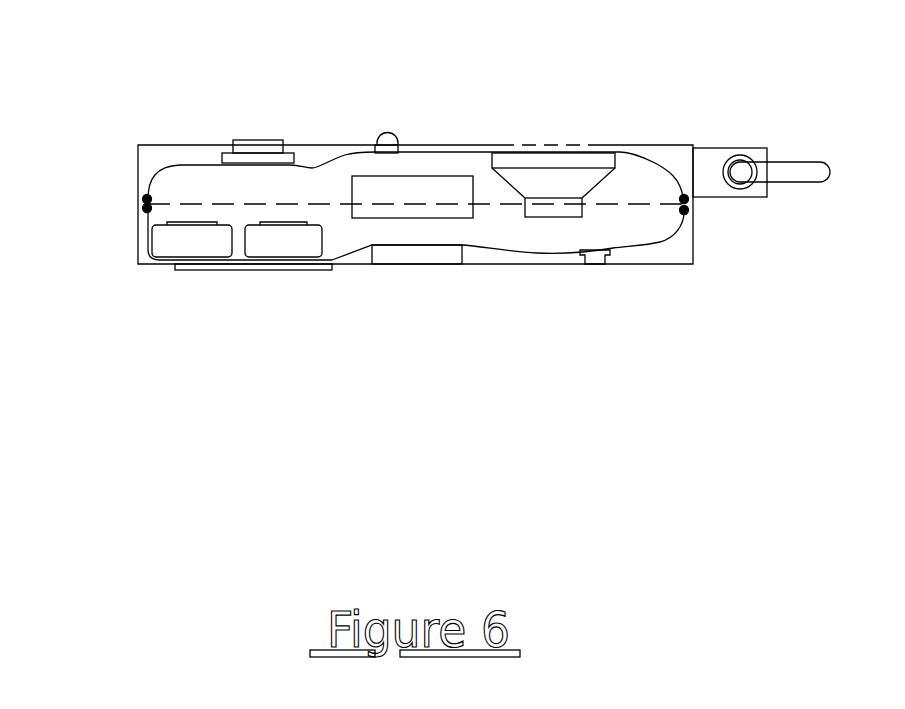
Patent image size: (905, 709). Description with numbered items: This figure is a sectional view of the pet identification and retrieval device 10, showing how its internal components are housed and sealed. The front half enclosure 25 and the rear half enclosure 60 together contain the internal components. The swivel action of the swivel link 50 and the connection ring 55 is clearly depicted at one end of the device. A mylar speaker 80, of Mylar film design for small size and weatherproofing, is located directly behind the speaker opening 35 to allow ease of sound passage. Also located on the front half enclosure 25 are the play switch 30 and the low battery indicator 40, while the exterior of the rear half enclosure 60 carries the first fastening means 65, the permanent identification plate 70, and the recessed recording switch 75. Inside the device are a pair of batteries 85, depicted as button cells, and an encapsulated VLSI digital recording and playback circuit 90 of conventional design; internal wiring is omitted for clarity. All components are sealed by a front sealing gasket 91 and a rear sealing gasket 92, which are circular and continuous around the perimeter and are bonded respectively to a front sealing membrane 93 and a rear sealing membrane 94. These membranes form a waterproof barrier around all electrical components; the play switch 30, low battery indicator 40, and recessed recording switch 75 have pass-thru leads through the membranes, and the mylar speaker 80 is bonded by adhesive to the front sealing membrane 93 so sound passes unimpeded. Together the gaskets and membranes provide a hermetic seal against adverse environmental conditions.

The pet identification and retrieval device 10 is at (178, 438).
The front half enclosure 25 is at (153, 160).
The play switch 30 is at (252, 145).
The speaker opening 35 is at (567, 144).
The low battery indicator 40 is at (386, 133).
The swivel link 50 is at (710, 183).
The connection ring 55 is at (795, 175).
The rear half enclosure 60 is at (143, 247).
The first fastening means 65 is at (398, 257).
The permanent identification plate 70 is at (247, 270).
The recessed recording switch 75 is at (593, 262).
The mylar speaker 80 is at (578, 178).
The batteries 85 is at (200, 243).
The VLSI digital recording and playback circuit 90 is at (405, 190).
The front sealing gasket 91 is at (143, 199).
The rear sealing gasket 92 is at (143, 208).
The front sealing membrane 93 is at (313, 165).
The rear sealing membrane 94 is at (520, 253).